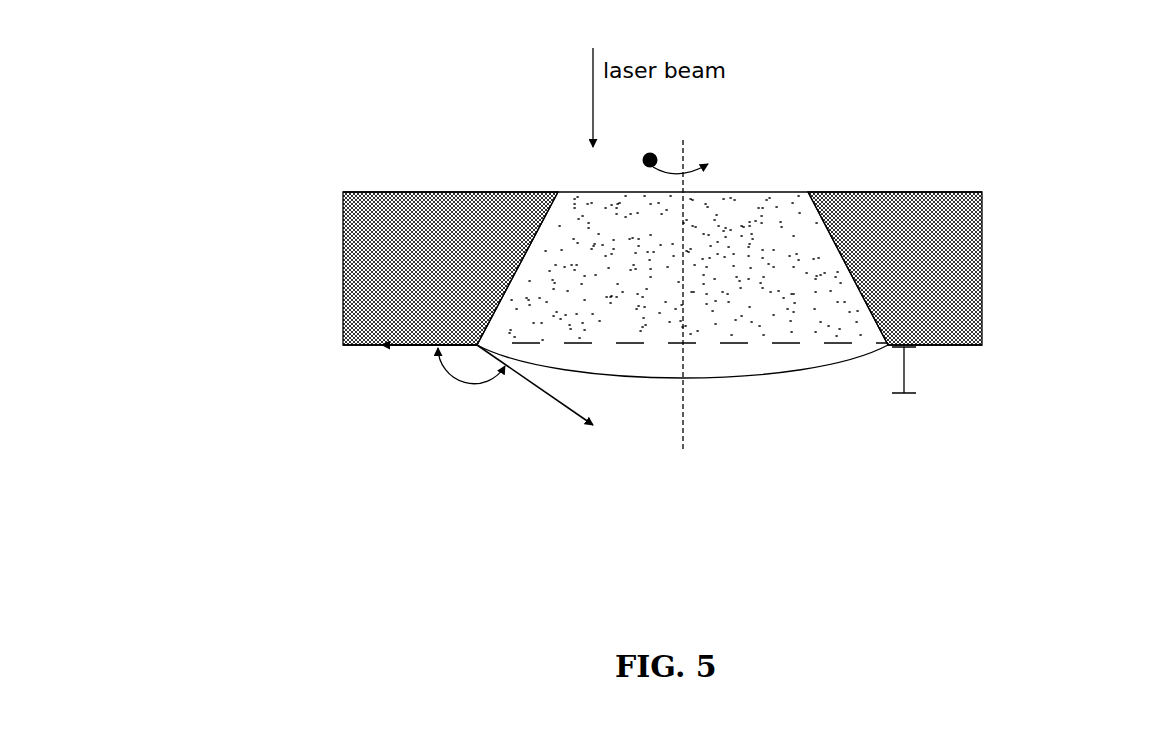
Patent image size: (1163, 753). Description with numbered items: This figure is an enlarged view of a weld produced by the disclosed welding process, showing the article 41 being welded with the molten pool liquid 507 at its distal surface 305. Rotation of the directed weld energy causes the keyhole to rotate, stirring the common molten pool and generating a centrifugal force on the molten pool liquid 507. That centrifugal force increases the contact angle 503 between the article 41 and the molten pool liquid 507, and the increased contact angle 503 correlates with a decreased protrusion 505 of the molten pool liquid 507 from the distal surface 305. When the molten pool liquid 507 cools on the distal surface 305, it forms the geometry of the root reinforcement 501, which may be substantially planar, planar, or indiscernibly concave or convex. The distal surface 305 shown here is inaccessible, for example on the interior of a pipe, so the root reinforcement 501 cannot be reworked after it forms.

The article 41 is at (277, 267).
The distal surface 305 is at (357, 347).
The root reinforcement 501 is at (788, 362).
The contact angle 503 is at (455, 377).
The protrusion 505 is at (908, 372).
The molten pool liquid 507 is at (752, 301).